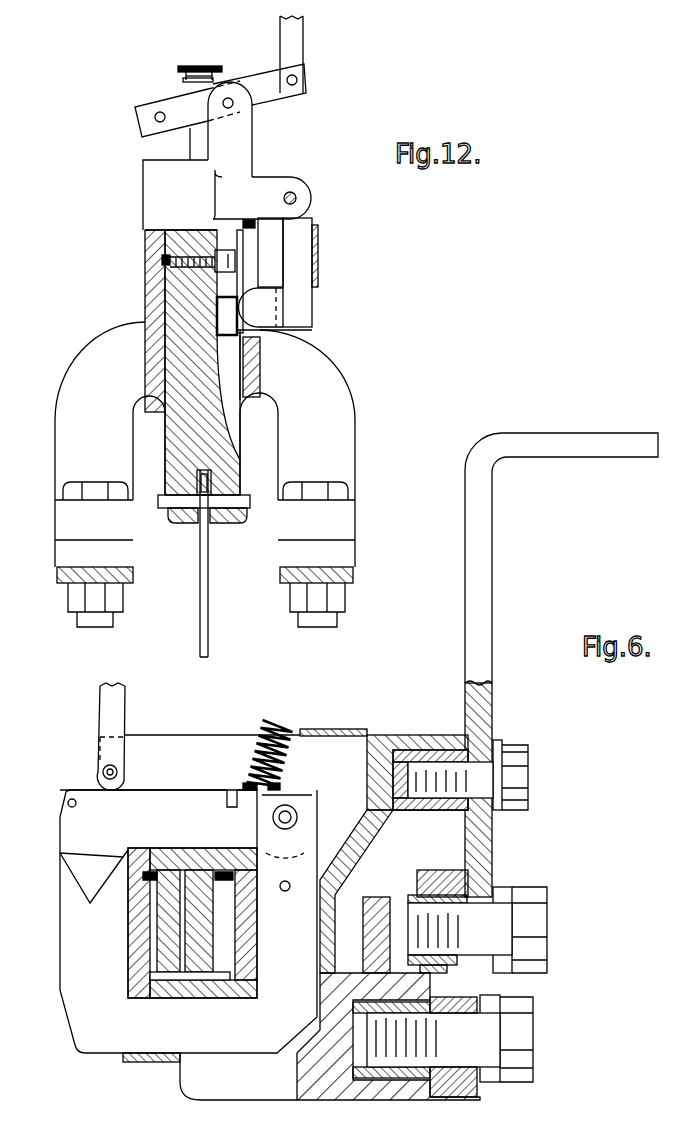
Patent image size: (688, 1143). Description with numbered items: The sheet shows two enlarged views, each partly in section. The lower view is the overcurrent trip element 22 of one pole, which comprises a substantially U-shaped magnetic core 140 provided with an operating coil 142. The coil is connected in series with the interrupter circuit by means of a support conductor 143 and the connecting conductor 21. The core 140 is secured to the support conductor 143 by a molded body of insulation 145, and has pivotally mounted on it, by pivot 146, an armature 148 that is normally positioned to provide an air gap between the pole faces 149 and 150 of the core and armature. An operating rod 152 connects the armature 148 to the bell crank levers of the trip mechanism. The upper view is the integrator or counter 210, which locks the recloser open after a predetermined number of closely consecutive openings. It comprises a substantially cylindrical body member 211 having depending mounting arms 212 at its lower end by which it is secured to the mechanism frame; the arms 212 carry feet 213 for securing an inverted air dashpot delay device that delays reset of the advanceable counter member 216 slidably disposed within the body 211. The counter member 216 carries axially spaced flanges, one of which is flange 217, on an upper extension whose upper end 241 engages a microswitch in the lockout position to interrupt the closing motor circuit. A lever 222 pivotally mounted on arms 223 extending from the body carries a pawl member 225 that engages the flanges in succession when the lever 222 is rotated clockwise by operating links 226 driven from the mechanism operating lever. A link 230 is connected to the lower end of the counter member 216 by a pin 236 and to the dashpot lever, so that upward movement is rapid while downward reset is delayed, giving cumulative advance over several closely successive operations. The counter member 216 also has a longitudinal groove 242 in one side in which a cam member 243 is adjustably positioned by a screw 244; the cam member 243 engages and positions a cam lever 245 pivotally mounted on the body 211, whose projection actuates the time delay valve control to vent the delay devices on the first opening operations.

In FIG. 12, the integrator or counter 210 is at (48, 336).
In FIG. 12, the cylindrical body member 211 is at (147, 252).
In FIG. 12, the mounting arms 212 is at (350, 380).
In FIG. 12, the feet 213 is at (355, 517).
In FIG. 12, the counter member 216 is at (165, 458).
In FIG. 12, the flange 217 is at (214, 70).
In FIG. 12, the lever 222 is at (306, 92).
In FIG. 12, the arms 223 is at (252, 130).
In FIG. 12, the pawl member 225 is at (152, 100).
In FIG. 12, the operating links 226 is at (305, 42).
In FIG. 12, the link 230 is at (210, 626).
In FIG. 12, the pin 236 is at (168, 512).
In FIG. 12, the upper end of extension 241 is at (200, 66).
In FIG. 12, the longitudinal groove 242 is at (237, 424).
In FIG. 12, the cam member 243 is at (258, 358).
In FIG. 12, the screw 244 is at (152, 272).
In FIG. 12, the cam lever 245 is at (313, 302).
In FIG. 6, the connecting conductor 21 is at (462, 1098).
In FIG. 6, the overcurrent trip element 22 is at (565, 864).
In FIG. 6, the magnetic core 140 is at (60, 943).
In FIG. 6, the operating coil 142 is at (160, 958).
In FIG. 6, the support conductor 143 is at (492, 576).
In FIG. 6, the molded body of insulation 145 is at (385, 735).
In FIG. 6, the pivot 146 is at (292, 830).
In FIG. 6, the armature 148 is at (60, 832).
In FIG. 6, the pole face 149 is at (72, 887).
In FIG. 6, the pole face 150 is at (66, 856).
In FIG. 6, the operating rod 152 is at (100, 715).